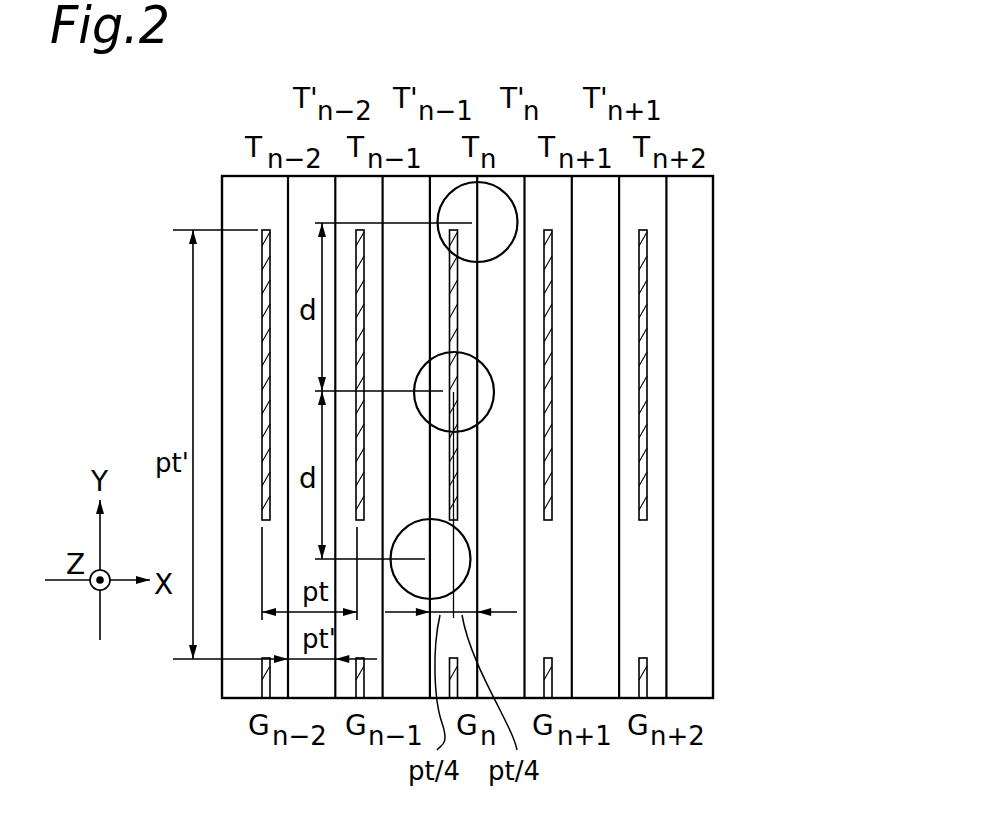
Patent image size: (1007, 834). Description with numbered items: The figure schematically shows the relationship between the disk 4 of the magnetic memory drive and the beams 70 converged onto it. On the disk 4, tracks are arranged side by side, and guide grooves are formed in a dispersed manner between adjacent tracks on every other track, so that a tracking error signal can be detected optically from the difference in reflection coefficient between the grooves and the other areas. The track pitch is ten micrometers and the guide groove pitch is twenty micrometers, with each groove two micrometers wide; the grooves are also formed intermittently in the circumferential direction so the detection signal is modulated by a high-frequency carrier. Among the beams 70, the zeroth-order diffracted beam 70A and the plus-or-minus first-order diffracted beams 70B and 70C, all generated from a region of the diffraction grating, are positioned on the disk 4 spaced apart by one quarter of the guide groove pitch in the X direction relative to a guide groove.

The disk 4 is at (714, 206).
The beam 70 is at (812, 302).
The 0th-order diffracted beam 70A is at (494, 392).
The +1st-order diffracted beam 70B is at (518, 222).
The -1st-order diffracted beam 70C is at (470, 560).